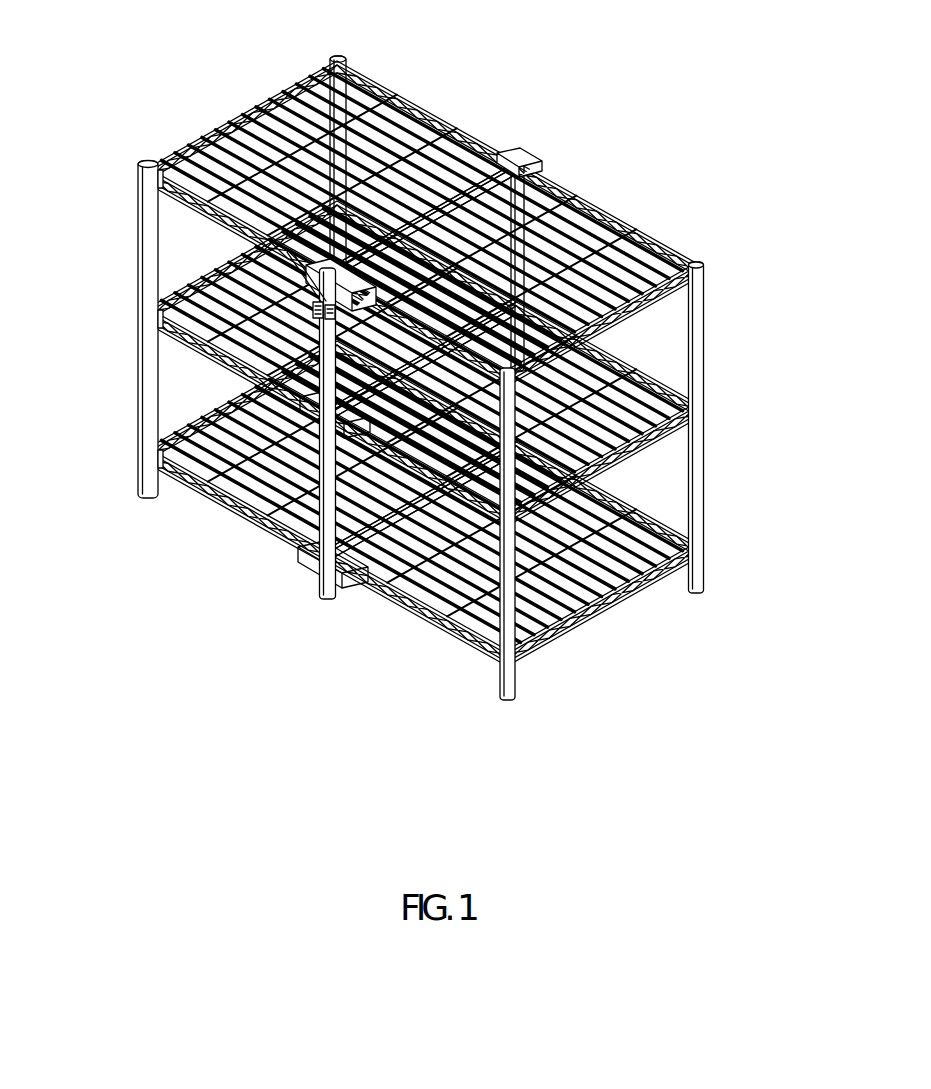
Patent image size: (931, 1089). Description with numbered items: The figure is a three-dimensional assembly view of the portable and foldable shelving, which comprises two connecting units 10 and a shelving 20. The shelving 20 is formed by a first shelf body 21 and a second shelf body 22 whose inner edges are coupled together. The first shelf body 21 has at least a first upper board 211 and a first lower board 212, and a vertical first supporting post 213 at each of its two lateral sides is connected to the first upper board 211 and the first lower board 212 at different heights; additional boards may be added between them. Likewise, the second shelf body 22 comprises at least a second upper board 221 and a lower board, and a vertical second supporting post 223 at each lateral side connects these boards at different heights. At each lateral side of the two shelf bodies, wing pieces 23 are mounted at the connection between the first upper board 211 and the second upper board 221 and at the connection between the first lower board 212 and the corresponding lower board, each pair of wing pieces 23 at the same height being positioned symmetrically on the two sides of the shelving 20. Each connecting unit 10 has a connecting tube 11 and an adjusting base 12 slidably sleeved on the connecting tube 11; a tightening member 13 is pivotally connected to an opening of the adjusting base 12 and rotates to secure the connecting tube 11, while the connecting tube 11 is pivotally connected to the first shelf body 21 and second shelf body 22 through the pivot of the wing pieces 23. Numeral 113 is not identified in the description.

The connecting unit 10 is at (158, 316).
The connecting tube 11 is at (290, 540).
The adjusting base 12 is at (266, 280).
The tightening member 13 is at (275, 363).
The fastener 113 is at (320, 268).
The shelving 20 is at (625, 192).
The first shelf body 21 is at (757, 427).
The first upper board 211 is at (637, 250).
The first lower board 212 is at (450, 615).
The first supporting post 213 is at (705, 343).
The second shelf body 22 is at (153, 125).
The second upper board 221 is at (408, 135).
The second supporting post 223 is at (147, 207).
The wing piece 23 is at (305, 262).